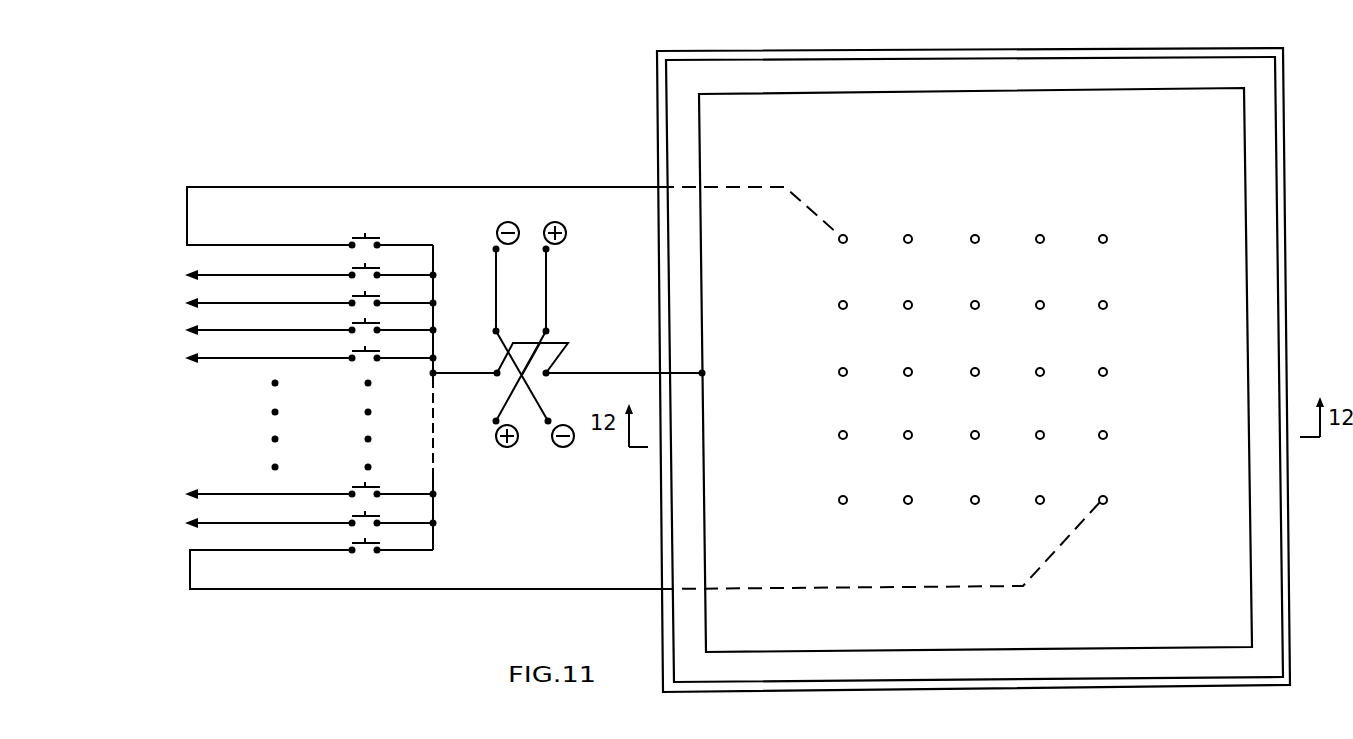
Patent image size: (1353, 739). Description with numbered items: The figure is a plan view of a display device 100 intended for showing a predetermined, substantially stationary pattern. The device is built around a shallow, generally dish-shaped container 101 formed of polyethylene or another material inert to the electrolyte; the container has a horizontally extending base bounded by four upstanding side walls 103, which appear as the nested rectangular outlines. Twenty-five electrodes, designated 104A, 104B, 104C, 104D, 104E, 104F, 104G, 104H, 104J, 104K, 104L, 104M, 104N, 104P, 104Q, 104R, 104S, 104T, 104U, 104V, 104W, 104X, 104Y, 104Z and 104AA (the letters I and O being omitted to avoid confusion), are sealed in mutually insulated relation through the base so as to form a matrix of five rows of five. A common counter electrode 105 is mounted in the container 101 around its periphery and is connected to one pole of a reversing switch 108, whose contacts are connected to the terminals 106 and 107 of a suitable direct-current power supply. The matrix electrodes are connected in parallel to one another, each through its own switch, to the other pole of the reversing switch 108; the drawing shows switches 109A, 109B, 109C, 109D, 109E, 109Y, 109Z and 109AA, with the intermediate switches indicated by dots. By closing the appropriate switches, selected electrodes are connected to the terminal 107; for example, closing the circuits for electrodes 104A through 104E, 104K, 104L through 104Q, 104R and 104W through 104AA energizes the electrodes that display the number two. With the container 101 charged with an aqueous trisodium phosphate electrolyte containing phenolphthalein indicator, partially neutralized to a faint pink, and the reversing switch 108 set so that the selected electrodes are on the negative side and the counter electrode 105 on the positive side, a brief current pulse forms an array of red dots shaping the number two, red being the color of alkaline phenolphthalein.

The display device 100 is at (636, 104).
The container 101 is at (656, 149).
The side walls 103 is at (1237, 50).
The common counter electrode 105 is at (637, 343).
The terminal 106 is at (547, 250).
The terminal 107 is at (496, 249).
The reversing switch 108 is at (500, 387).
The switch 109A is at (352, 238).
The switch 109B is at (352, 268).
The switch 109C is at (352, 296).
The switch 109D is at (352, 323).
The switch 109E is at (352, 351).
The switch 109Y is at (352, 487).
The switch 109Z is at (352, 516).
The switch 109AA is at (353, 543).
The electrode 104A is at (844, 235).
The electrode 104B is at (909, 235).
The electrode 104C is at (976, 235).
The electrode 104D is at (1041, 235).
The electrode 104E is at (1104, 235).
The electrode 104F is at (844, 301).
The electrode 104G is at (909, 301).
The electrode 104H is at (976, 301).
The electrode 104J is at (1041, 301).
The electrode 104K is at (1104, 301).
The electrode 104L is at (844, 368).
The electrode 104M is at (909, 368).
The electrode 104N is at (976, 368).
The electrode 104P is at (1041, 368).
The electrode 104Q is at (1104, 368).
The electrode 104R is at (844, 431).
The electrode 104S is at (909, 431).
The electrode 104T is at (976, 431).
The electrode 104U is at (1041, 431).
The electrode 104V is at (1104, 431).
The electrode 104W is at (844, 496).
The electrode 104X is at (909, 496).
The electrode 104Y is at (976, 496).
The electrode 104Z is at (1041, 496).
The electrode 104AA is at (1104, 496).